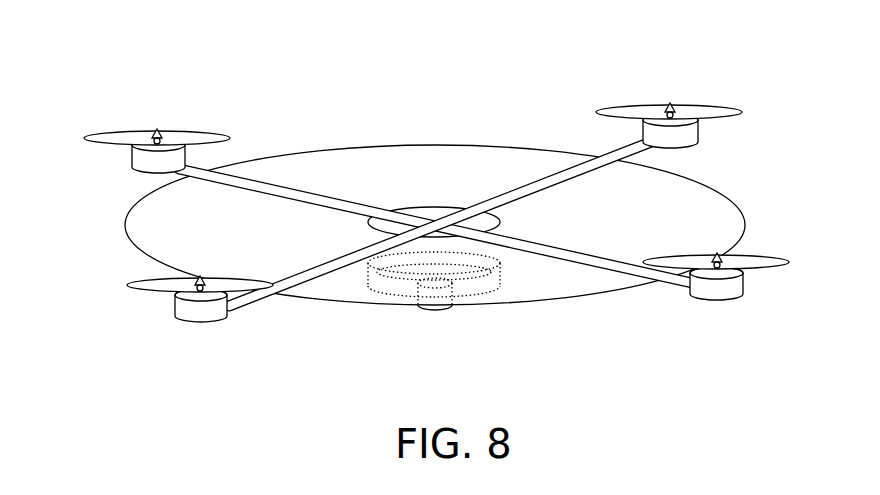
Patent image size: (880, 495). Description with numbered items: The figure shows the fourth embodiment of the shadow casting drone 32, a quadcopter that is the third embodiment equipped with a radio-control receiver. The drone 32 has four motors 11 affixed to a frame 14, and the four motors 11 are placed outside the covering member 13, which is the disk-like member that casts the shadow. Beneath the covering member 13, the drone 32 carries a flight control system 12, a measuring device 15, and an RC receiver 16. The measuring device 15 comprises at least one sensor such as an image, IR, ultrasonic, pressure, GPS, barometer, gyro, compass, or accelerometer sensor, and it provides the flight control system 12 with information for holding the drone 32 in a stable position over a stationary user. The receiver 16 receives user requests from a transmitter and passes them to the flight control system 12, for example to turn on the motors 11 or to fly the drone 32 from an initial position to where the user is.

The motors 11 is at (353, 127).
The flight control system 12 is at (467, 297).
The covering member 13 is at (435, 174).
The frame 14 is at (435, 187).
The measuring device 15 is at (451, 343).
The RC receiver 16 is at (448, 340).
The shadow casting drone 32 is at (418, 222).